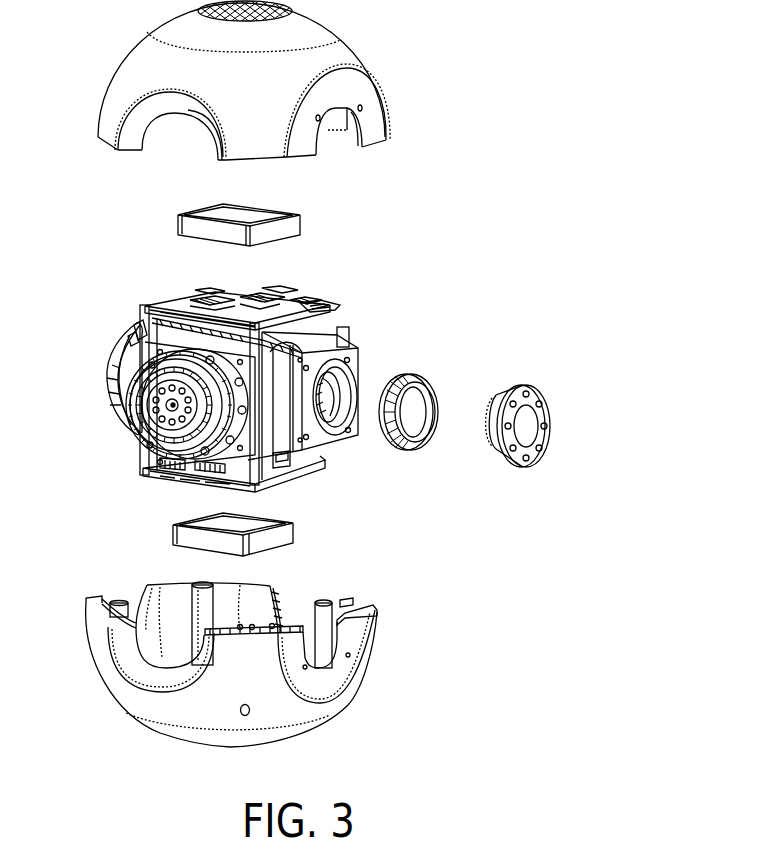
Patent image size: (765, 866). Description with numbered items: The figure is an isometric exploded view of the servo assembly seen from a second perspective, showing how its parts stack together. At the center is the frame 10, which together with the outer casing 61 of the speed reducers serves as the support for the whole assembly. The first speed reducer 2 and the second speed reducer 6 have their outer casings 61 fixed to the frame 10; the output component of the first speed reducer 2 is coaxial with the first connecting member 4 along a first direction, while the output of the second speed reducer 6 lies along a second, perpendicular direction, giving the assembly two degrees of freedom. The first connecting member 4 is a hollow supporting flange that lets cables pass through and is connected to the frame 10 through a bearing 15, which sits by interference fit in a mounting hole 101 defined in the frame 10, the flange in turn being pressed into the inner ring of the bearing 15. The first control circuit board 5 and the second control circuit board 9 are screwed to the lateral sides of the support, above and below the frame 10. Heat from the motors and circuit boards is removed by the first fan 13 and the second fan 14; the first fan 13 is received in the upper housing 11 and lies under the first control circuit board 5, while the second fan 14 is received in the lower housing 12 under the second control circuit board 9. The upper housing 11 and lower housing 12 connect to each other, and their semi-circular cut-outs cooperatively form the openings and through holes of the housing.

The first speed reducer 2 is at (120, 343).
The first connecting member 4 is at (502, 452).
The first control circuit board 5 is at (195, 293).
The second speed reducer 6 is at (145, 441).
The second control circuit board 9 is at (176, 475).
The frame 10 is at (355, 338).
The upper housing 11 is at (357, 50).
The lower housing 12 is at (372, 648).
The first fan 13 is at (302, 218).
The second fan 14 is at (295, 527).
The bearing 15 is at (413, 374).
The outer casing 61 is at (140, 334).
The mounting hole 101 is at (332, 442).